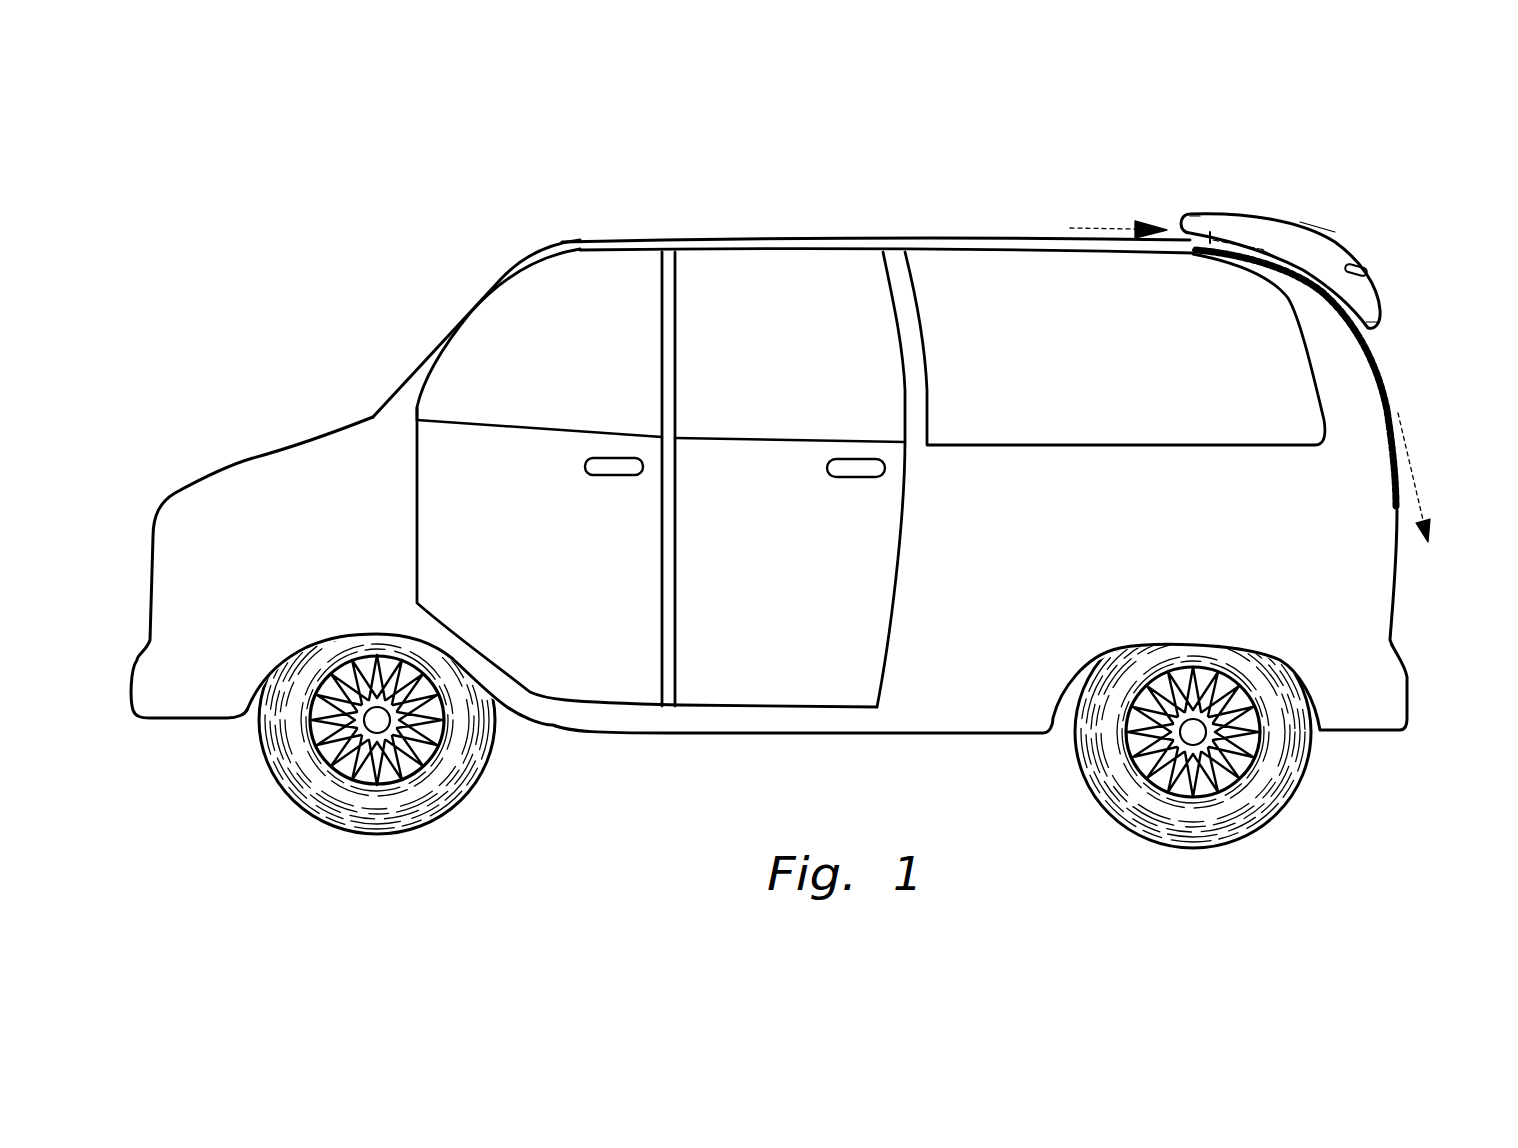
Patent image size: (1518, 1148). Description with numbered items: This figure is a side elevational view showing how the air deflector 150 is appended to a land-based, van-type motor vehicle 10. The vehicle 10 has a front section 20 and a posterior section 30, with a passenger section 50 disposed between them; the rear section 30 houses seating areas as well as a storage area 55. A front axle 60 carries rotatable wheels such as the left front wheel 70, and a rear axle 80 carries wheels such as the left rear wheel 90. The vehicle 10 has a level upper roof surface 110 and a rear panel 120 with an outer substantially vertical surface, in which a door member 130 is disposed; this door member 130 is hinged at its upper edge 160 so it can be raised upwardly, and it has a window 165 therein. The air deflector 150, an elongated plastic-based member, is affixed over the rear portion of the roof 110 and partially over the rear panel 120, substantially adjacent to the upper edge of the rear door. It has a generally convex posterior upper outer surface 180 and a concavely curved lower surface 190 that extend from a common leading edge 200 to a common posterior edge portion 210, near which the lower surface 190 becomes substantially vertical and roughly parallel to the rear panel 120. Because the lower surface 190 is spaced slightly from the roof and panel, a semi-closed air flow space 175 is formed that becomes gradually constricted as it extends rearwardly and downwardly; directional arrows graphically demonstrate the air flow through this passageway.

The motor vehicle 10 is at (626, 198).
The front section 20 is at (252, 460).
The posterior section 30 is at (1397, 547).
The passenger section 50 is at (722, 620).
The storage area 55 is at (1033, 632).
The front axle 60 is at (310, 737).
The left front wheel 70 is at (315, 798).
The rear axle 80 is at (1253, 755).
The left rear wheel 90 is at (1240, 808).
The upper roof surface 110 is at (923, 238).
The rear panel 120 is at (1397, 433).
The door member 130 is at (1403, 450).
The air deflector 150 is at (1345, 238).
The upper edge 160 is at (1207, 258).
The window 165 is at (1298, 272).
The air flow space 175 is at (1270, 245).
The upper outer surface 180 is at (1317, 223).
The lower surface 190 is at (1197, 216).
The leading edge 200 is at (1183, 230).
The posterior edge portion 210 is at (1382, 325).